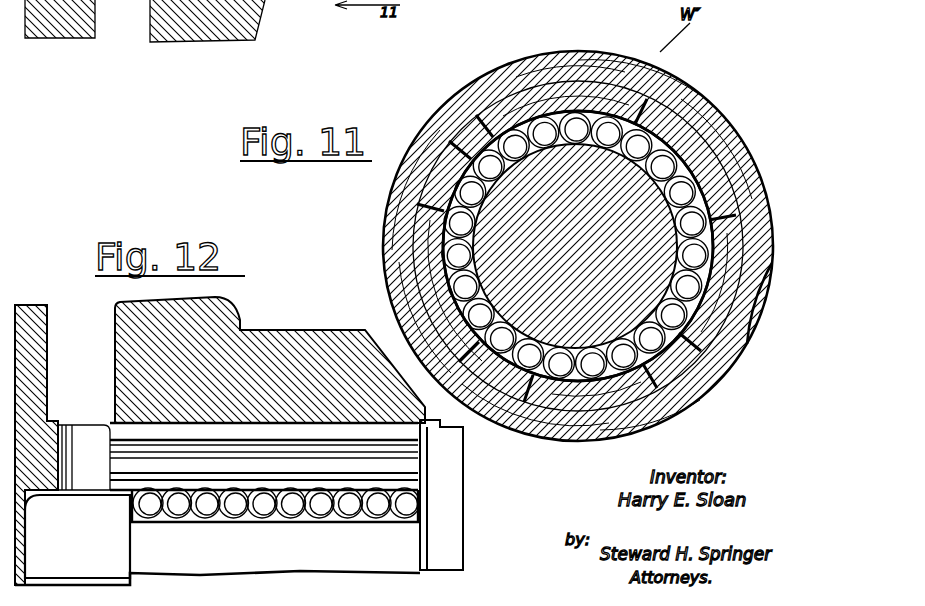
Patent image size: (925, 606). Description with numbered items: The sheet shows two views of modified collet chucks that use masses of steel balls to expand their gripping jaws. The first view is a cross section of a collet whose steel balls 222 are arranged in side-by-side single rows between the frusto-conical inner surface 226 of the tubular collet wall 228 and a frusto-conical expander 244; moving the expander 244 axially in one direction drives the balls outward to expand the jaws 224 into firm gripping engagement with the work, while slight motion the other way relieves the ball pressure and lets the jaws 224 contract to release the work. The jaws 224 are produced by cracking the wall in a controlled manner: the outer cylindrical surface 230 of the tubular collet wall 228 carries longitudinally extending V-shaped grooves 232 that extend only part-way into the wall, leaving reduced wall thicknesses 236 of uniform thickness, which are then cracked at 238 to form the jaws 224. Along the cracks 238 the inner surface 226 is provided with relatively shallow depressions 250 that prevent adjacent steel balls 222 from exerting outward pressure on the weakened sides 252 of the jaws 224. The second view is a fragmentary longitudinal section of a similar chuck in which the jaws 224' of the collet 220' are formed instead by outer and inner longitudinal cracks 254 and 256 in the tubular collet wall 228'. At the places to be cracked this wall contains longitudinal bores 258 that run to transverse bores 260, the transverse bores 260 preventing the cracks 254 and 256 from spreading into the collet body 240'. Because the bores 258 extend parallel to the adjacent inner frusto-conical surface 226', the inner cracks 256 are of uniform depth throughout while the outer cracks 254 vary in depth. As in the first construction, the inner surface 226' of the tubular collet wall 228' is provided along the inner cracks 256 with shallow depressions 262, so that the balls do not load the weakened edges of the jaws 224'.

In FIG. 11, the steel balls 222 is at (766, 167).
In FIG. 11, the jaws 224 is at (567, 240).
In FIG. 11, the inner surface 226 is at (580, 192).
In FIG. 11, the tubular collet wall 228 is at (575, 205).
In FIG. 11, the outer cylindrical surface 230 is at (653, 49).
In FIG. 11, the V-shaped grooves 232 is at (600, 75).
In FIG. 11, the reduced wall thicknesses 236 is at (570, 90).
In FIG. 11, the cracks 238 is at (610, 100).
In FIG. 11, the frusto-conical expander 244 is at (770, 275).
In FIG. 11, the depressions 250 is at (500, 100).
In FIG. 11, the weakened sides 252 is at (700, 115).
In FIG. 12, the collet body 240' is at (44, 427).
In FIG. 12, the collet 220' is at (220, 441).
In FIG. 12, the tubular collet wall 228' is at (251, 408).
In FIG. 12, the outer longitudinal cracks 254 is at (225, 430).
In FIG. 12, the longitudinal bores 258 is at (324, 468).
In FIG. 12, the transverse bores 260 is at (90, 440).
In FIG. 12, the inner longitudinal cracks 256 is at (128, 495).
In FIG. 12, the inner frusto-conical surface 226' is at (264, 515).
In FIG. 12, the shallow depressions 262 is at (275, 505).
In FIG. 12, the jaws 224' is at (463, 495).